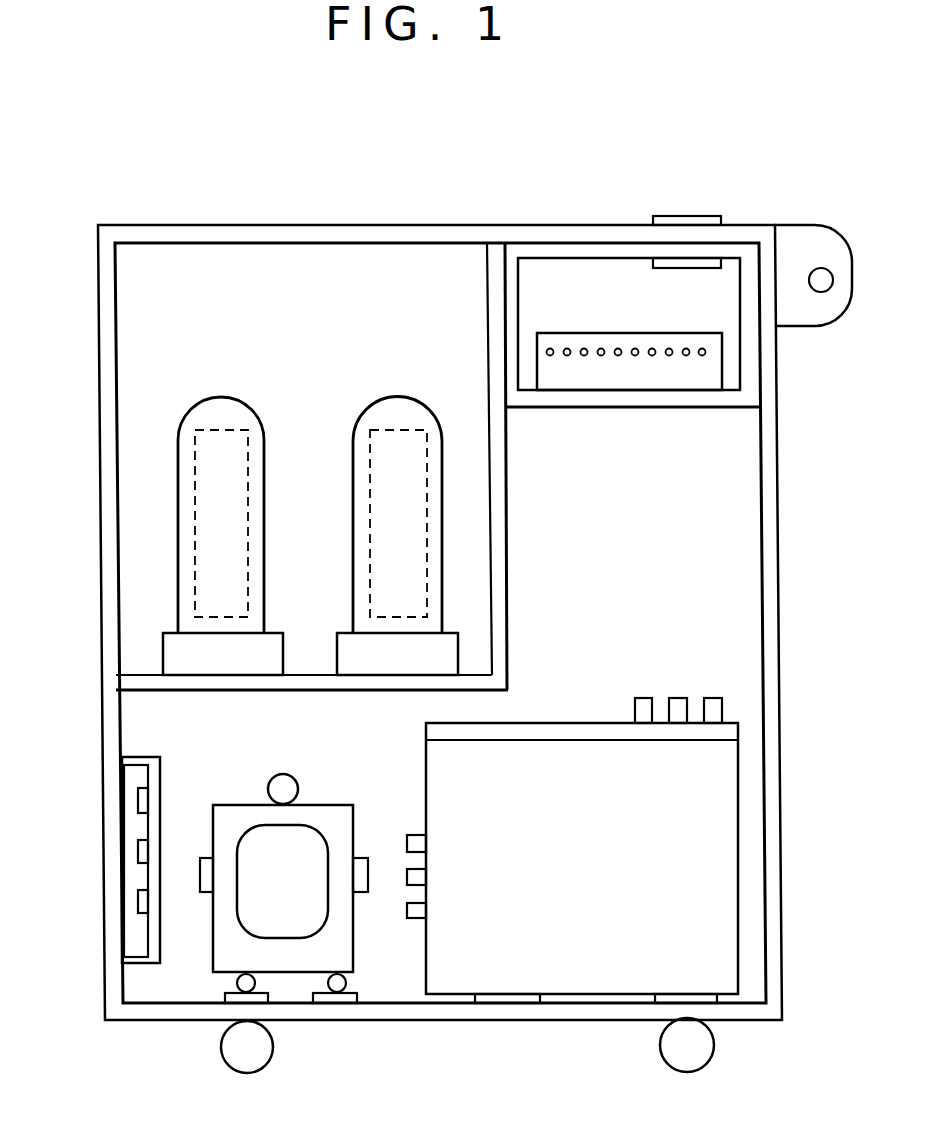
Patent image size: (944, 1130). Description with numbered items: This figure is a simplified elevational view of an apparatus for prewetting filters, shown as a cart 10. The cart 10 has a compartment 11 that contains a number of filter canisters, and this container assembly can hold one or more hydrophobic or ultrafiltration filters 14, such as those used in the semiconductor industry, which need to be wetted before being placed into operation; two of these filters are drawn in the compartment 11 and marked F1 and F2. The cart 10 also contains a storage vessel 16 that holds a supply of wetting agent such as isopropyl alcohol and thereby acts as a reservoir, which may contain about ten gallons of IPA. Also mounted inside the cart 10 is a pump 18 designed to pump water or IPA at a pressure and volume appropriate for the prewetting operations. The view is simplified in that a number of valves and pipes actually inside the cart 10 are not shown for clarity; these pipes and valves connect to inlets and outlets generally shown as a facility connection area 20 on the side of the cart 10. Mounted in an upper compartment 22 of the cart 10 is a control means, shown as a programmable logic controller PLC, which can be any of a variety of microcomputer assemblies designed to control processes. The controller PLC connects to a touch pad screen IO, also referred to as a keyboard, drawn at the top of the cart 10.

The cart 10 is at (783, 913).
The compartment 11 is at (367, 270).
The filters 14 is at (310, 504).
The storage vessel 16 is at (738, 773).
The pump 18 is at (330, 805).
The facility connection area 20 is at (145, 963).
The upper compartment 22 is at (710, 316).
The programmable logic controller PLC is at (563, 333).
The touch pad screen IO is at (702, 216).
The fuse F1 is at (253, 403).
The fuse F2 is at (357, 417).